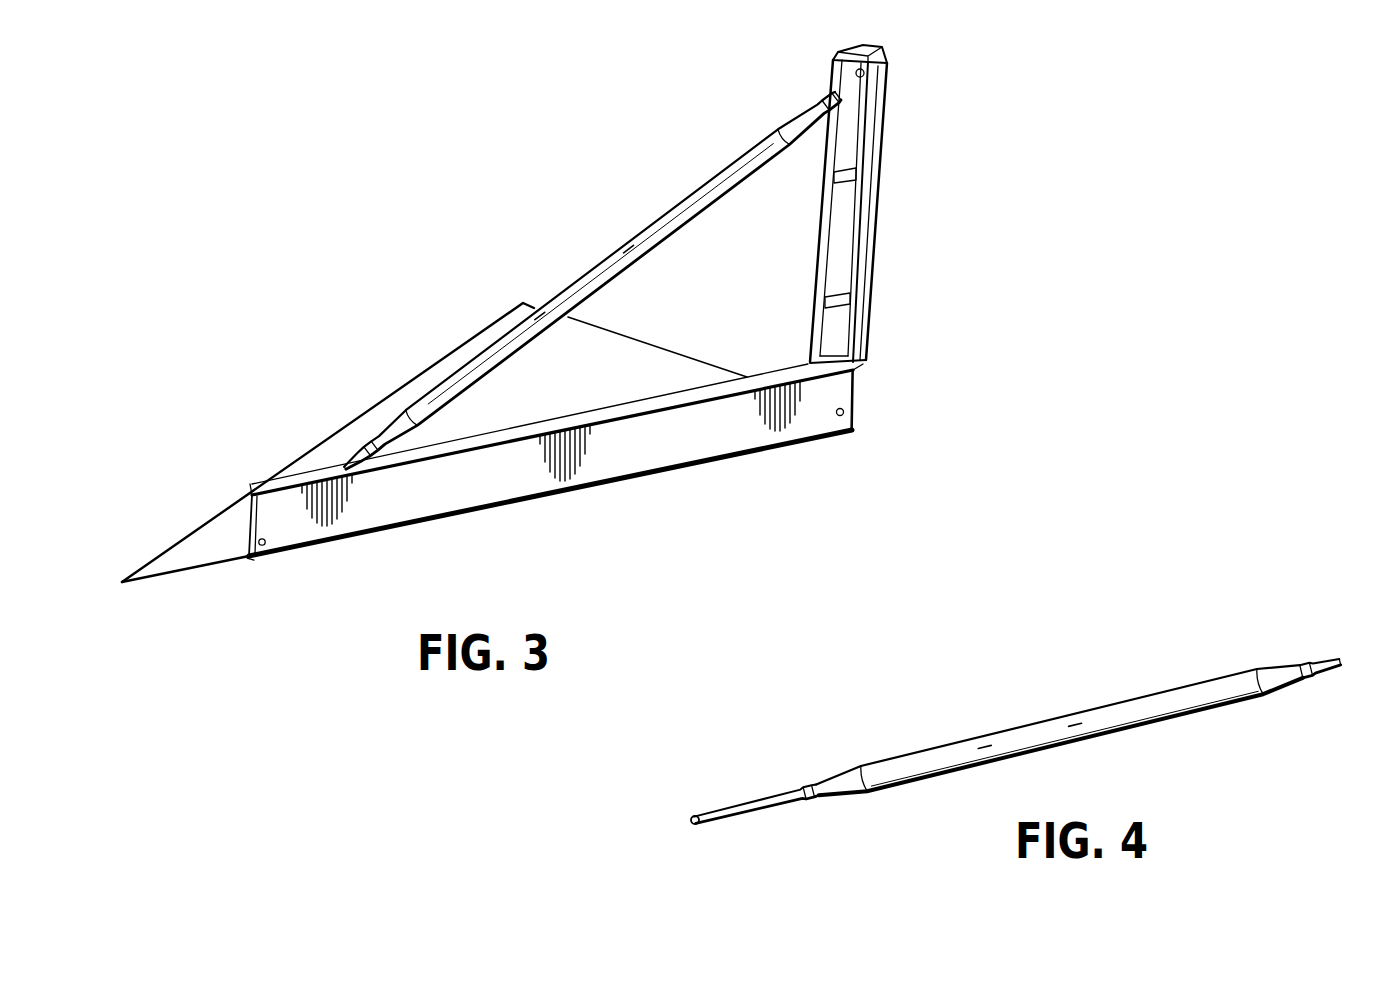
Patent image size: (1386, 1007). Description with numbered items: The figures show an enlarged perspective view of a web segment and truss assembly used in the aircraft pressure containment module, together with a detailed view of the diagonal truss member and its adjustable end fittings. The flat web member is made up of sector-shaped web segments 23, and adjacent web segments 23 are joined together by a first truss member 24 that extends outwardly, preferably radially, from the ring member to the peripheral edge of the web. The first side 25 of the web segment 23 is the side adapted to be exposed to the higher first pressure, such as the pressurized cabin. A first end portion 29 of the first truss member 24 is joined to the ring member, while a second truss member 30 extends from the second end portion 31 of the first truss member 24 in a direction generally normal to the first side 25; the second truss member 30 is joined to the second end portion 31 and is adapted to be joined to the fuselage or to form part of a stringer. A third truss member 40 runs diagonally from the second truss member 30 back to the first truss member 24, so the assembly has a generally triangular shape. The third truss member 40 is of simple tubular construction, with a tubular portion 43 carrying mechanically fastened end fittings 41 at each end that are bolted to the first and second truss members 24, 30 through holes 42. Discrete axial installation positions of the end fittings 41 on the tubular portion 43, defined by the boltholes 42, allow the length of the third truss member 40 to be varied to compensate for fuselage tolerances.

In FIG. 3, the web segment 23 is at (597, 379).
In FIG. 3, the first truss member 24 is at (548, 492).
In FIG. 3, the first side 25 is at (655, 358).
In FIG. 3, the first end portion 29 is at (262, 560).
In FIG. 3, the second truss member 30 is at (842, 262).
In FIG. 3, the second end portion 31 is at (848, 394).
In FIG. 3, the third truss member 40 is at (645, 215).
In FIG. 4, the third truss member 40 is at (980, 732).
In FIG. 4, the end fitting 41 is at (770, 807).
In FIG. 4, the hole 42 is at (690, 825).
In FIG. 4, the tubular portion 43 is at (1120, 700).